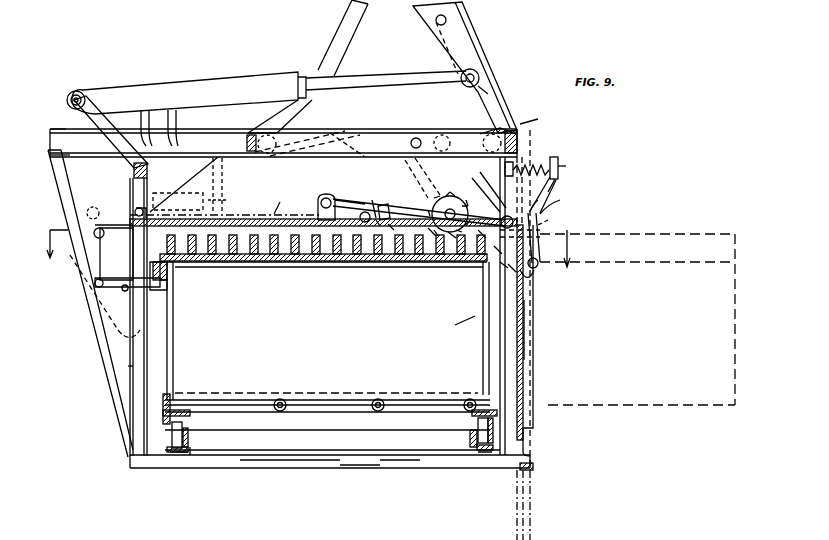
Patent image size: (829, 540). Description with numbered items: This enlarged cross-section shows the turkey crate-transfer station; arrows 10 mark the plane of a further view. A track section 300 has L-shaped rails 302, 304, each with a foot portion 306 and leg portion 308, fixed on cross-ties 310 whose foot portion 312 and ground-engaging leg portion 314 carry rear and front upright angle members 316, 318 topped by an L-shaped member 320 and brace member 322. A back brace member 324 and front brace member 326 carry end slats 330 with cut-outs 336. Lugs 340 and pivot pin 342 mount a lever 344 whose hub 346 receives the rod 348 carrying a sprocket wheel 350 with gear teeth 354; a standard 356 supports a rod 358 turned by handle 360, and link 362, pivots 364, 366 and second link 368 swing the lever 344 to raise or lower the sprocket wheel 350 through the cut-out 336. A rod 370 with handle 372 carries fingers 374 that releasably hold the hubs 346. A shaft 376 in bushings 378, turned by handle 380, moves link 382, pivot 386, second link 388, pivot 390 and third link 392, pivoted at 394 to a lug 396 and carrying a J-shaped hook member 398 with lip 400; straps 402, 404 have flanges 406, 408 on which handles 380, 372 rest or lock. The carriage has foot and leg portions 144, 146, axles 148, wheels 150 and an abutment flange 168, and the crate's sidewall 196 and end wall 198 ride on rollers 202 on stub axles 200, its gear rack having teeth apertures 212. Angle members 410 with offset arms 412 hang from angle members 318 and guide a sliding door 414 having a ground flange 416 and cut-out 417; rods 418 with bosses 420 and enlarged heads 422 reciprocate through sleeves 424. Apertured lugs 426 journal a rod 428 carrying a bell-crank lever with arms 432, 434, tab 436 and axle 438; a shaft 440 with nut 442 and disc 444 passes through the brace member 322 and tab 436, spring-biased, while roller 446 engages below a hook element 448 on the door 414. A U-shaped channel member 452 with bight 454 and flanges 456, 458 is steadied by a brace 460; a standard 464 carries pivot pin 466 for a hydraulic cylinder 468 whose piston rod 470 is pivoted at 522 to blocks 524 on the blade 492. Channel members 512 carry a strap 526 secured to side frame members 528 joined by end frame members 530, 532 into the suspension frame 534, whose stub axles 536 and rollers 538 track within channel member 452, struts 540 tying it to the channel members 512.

The section line 10 is at (378, 317).
The foot portion 144 is at (468, 418).
The leg portion 146 is at (528, 426).
The axle 148 is at (170, 433).
The wheel 150 is at (166, 448).
The abutment flange 168 is at (172, 388).
The sidewall 196 is at (327, 330).
The end wall 198 is at (175, 364).
The stub axle 200 is at (282, 412).
The roller 202 is at (376, 412).
The gear teeth aperture 212 is at (244, 268).
The track section 300 is at (243, 476).
The L-shaped rail 302 is at (198, 458).
The L-shaped rail 304 is at (478, 450).
The foot portion 306 is at (484, 456).
The leg portion 308 is at (470, 440).
The cross-tie 310 is at (357, 478).
The foot portion 312 is at (324, 458).
The leg portion 314 is at (394, 464).
The upright L-shaped angle member 316 is at (128, 366).
The upright L-shaped angle member 318 is at (500, 318).
The L-shaped member 320 is at (148, 169).
The L-shaped brace member 322 is at (520, 144).
The back brace member 324 is at (149, 317).
The front brace member 326 is at (498, 252).
The end slat 330 is at (290, 214).
The cut-out portion 336 is at (278, 202).
The upstanding lug 340 is at (326, 195).
The pivot pin 342 is at (345, 199).
The lever 344 is at (366, 200).
The hub 346 is at (432, 232).
The cylindrical rod 348 is at (452, 236).
The sprocket wheel 350 is at (449, 204).
The gear teeth 354 is at (482, 236).
The upright standard 356 is at (322, 225).
The cylindrical rod 358 is at (360, 222).
The handle 360 is at (411, 178).
The link 362 is at (390, 200).
The pivotal connection 364 is at (376, 202).
The pivotal connection 366 is at (392, 230).
The second link 368 is at (376, 226).
The second continuous rod 370 is at (504, 266).
The handle 372 is at (384, 132).
The finger 374 is at (489, 192).
The shaft 376 is at (156, 200).
The bushing 378 is at (135, 208).
The handle 380 is at (178, 201).
The link 382 is at (112, 210).
The pivotal connection 386 is at (113, 254).
The second link 388 is at (98, 252).
The pivotal connection 390 is at (95, 283).
The third link 392 is at (98, 338).
The pivotal connection 394 is at (116, 296).
The lug 396 is at (128, 310).
The J-shaped hook member 398 is at (168, 290).
The lip 400 is at (168, 277).
The strap 402 is at (248, 158).
The strap 404 is at (431, 143).
The flange 406 is at (222, 197).
The flange 408 is at (404, 143).
The angle member 410 is at (536, 372).
The laterally-offset arm 412 is at (542, 215).
The door 414 is at (528, 334).
The ground-engaging flange 416 is at (536, 468).
The cut-out 417 is at (455, 326).
The rod 418 is at (536, 352).
The boss 420 is at (530, 450).
The enlarged head 422 is at (548, 220).
The sleeve 424 is at (540, 400).
The apertured lug 426 is at (540, 200).
The rod 428 is at (560, 200).
The arm 432 is at (560, 180).
The arm 434 is at (536, 238).
The tab 436 is at (556, 158).
The axle 438 is at (544, 263).
The shaft 440 is at (535, 162).
The nut 442 is at (518, 200).
The disc 444 is at (558, 165).
The roller 446 is at (538, 268).
The hook element 448 is at (512, 270).
The U-shaped channel member 452 is at (50, 135).
The bight 454 is at (222, 130).
The flange 456 is at (50, 128).
The flange 458 is at (55, 153).
The brace 460 is at (60, 200).
The standard 464 is at (112, 186).
The pivot pin 466 is at (78, 92).
The hydraulic cylinder 468 is at (254, 74).
The piston rod 470 is at (410, 73).
The blade 492 is at (478, 44).
The U-shaped channel member 512 is at (430, 32).
The pivotal connection 522 is at (462, 86).
The block 524 is at (482, 94).
The strap 526 is at (505, 126).
The side frame member 528 is at (335, 130).
The end frame member 530 is at (238, 185).
The end frame member 532 is at (540, 116).
The suspension frame 534 is at (520, 128).
The stub axle 536 is at (528, 106).
The roller 538 is at (278, 145).
The strut 540 is at (340, 47).